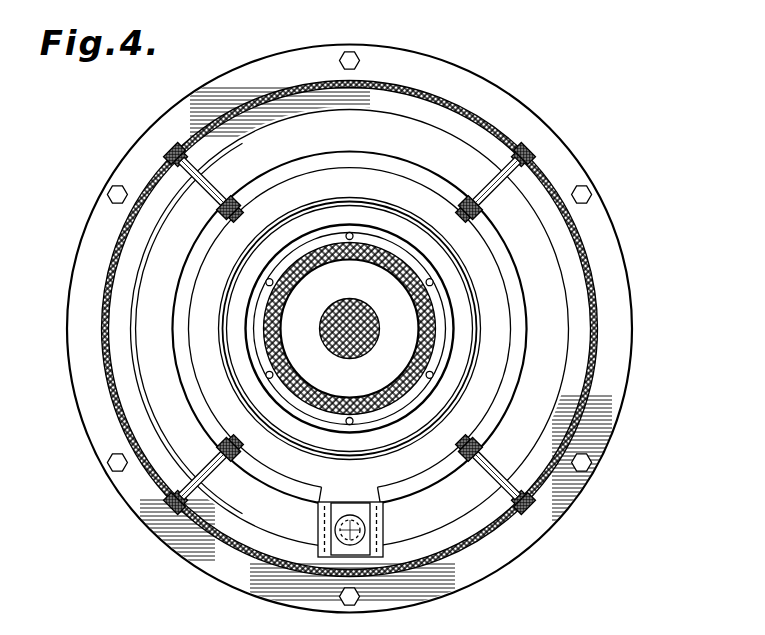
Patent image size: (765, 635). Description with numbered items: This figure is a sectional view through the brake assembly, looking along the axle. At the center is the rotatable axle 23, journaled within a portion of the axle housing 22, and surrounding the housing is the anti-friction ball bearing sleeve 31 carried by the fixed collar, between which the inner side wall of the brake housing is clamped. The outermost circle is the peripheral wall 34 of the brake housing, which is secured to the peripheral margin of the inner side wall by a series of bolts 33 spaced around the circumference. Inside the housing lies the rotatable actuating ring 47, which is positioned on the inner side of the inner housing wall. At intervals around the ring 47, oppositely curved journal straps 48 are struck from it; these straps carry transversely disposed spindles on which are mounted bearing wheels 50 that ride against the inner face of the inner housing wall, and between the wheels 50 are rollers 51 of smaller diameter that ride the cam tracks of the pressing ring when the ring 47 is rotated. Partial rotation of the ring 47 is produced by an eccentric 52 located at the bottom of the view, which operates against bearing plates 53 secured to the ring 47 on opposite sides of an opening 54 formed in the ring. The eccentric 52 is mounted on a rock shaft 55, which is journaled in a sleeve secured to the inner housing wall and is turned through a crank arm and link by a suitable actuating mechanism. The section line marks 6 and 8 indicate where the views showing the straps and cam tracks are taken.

The section line 6- 6 is at (463, 438).
The section line 8- 8 is at (507, 455).
The axle housing 22 is at (357, 403).
The rotatable axle 23 is at (357, 307).
The anti-friction ball bearing sleeve 31 is at (424, 352).
The bolts 33 is at (352, 54).
The peripheral wall 34 is at (603, 340).
The rotatable actuating ring 47 is at (516, 373).
The journal straps 48 is at (178, 152).
The bearing wheels 50 is at (224, 205).
The rollers 51 is at (221, 181).
The eccentric 52 is at (360, 545).
The bearing plates 53 is at (323, 518).
The opening 54 is at (348, 502).
The rock shaft 55 is at (332, 556).